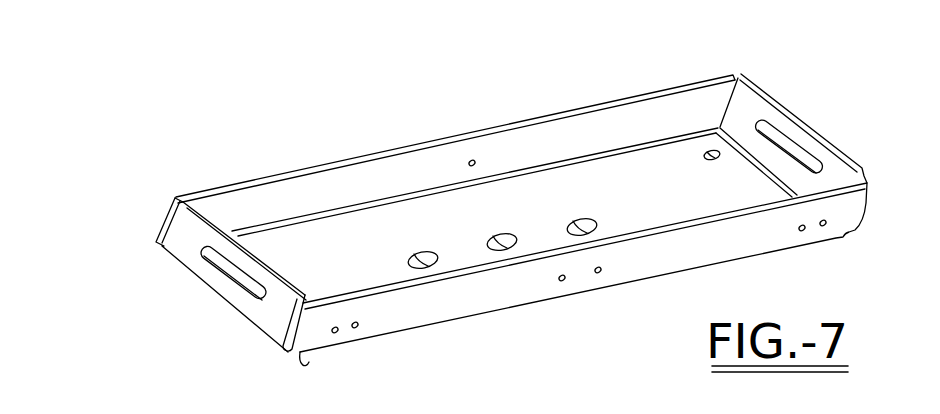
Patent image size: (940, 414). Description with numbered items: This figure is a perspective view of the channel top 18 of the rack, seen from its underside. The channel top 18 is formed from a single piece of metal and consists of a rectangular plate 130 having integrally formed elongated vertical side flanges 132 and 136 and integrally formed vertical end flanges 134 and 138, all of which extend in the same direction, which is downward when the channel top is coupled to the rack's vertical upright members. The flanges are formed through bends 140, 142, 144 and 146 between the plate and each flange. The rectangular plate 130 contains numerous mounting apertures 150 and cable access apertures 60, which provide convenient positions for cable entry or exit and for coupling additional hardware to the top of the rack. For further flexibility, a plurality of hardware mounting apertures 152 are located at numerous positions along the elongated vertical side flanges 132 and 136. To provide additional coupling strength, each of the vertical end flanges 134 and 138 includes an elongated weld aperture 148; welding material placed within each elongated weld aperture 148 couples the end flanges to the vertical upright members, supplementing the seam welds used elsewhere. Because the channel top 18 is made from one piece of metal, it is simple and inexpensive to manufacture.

The channel top 18 is at (338, 140).
The cable access aperture 60 is at (705, 153).
The rectangular plate 130 is at (472, 197).
The elongated vertical side flange 132 is at (547, 130).
The vertical end flange 134 is at (762, 97).
The elongated vertical side flange 136 is at (500, 295).
The vertical end flange 138 is at (176, 244).
The bend 140 is at (290, 357).
The bend 142 is at (303, 366).
The bend 144 is at (747, 157).
The bend 146 is at (267, 228).
The elongated weld aperture 148 is at (797, 155).
The mounting aperture 150 is at (573, 220).
The hardware mounting aperture 152 is at (472, 160).